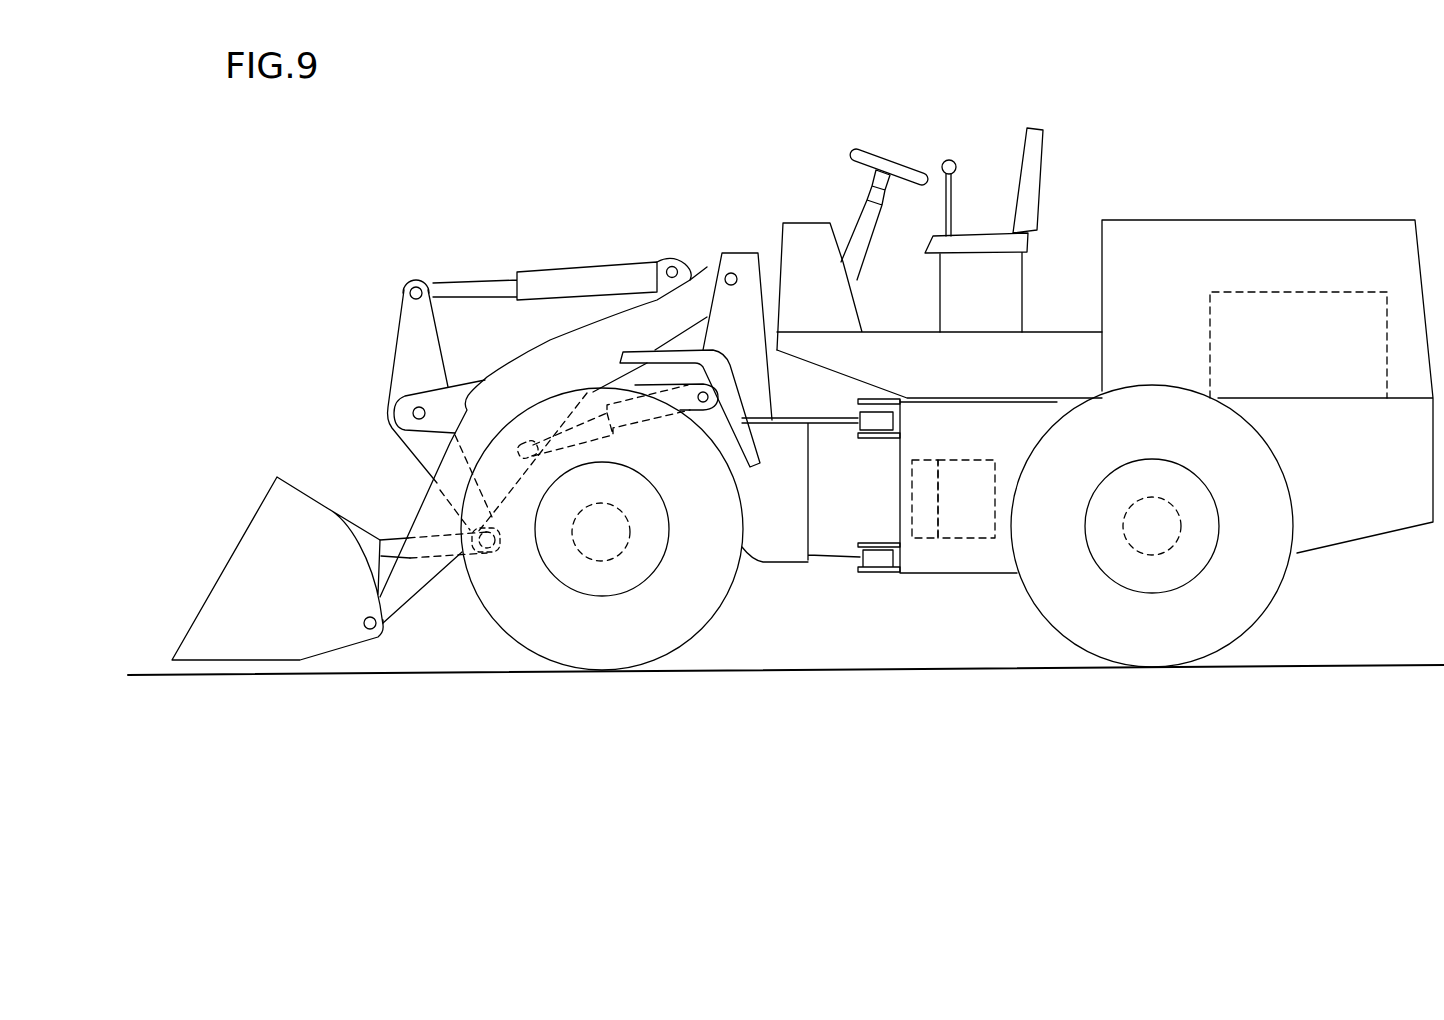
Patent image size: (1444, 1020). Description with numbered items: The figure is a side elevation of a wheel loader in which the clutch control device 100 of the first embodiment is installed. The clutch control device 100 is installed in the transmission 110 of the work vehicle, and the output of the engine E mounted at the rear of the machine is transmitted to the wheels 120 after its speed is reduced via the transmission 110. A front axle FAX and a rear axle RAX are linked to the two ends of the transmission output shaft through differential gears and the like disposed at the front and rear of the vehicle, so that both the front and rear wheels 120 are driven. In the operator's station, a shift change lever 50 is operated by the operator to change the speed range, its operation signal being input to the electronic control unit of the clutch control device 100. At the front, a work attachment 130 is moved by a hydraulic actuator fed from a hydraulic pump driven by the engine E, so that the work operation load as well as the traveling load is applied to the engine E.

The work attachment 130 is at (385, 362).
The shift change lever 50 is at (897, 183).
The engine E is at (1310, 290).
The clutch control device 100 is at (930, 537).
The transmission 110 is at (947, 538).
The wheels 120 is at (688, 643).
The front axle FAX is at (596, 561).
The rear axle RAX is at (1134, 555).